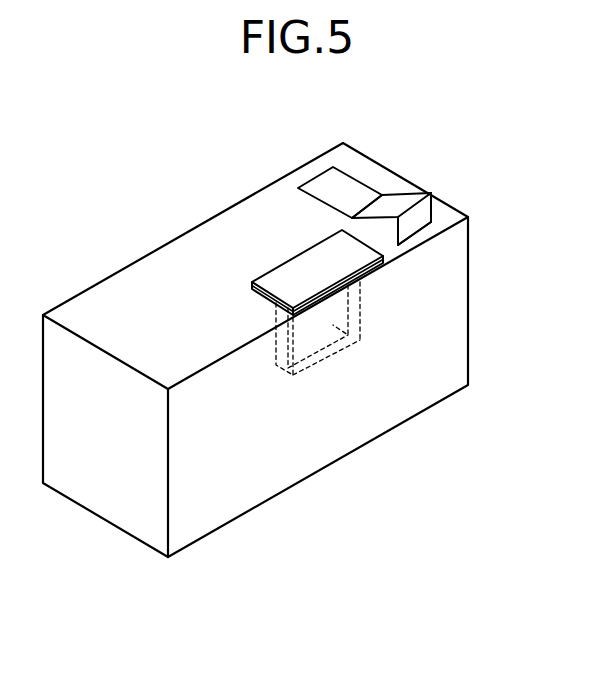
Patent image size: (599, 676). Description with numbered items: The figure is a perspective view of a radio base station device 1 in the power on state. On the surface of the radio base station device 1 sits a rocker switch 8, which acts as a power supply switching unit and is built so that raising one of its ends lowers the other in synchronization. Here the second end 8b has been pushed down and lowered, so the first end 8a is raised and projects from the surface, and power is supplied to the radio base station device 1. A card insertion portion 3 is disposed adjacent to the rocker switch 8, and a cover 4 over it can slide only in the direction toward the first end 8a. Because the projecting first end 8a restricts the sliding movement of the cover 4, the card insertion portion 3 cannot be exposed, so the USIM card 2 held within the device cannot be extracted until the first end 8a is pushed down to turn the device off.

The radio base station device 1 is at (207, 513).
The USIM card 2 is at (360, 340).
The card insertion portion 3 is at (320, 360).
The cover 4 is at (288, 275).
The rocker switch 8 is at (400, 202).
The first end 8a is at (390, 225).
The second end 8b is at (338, 192).